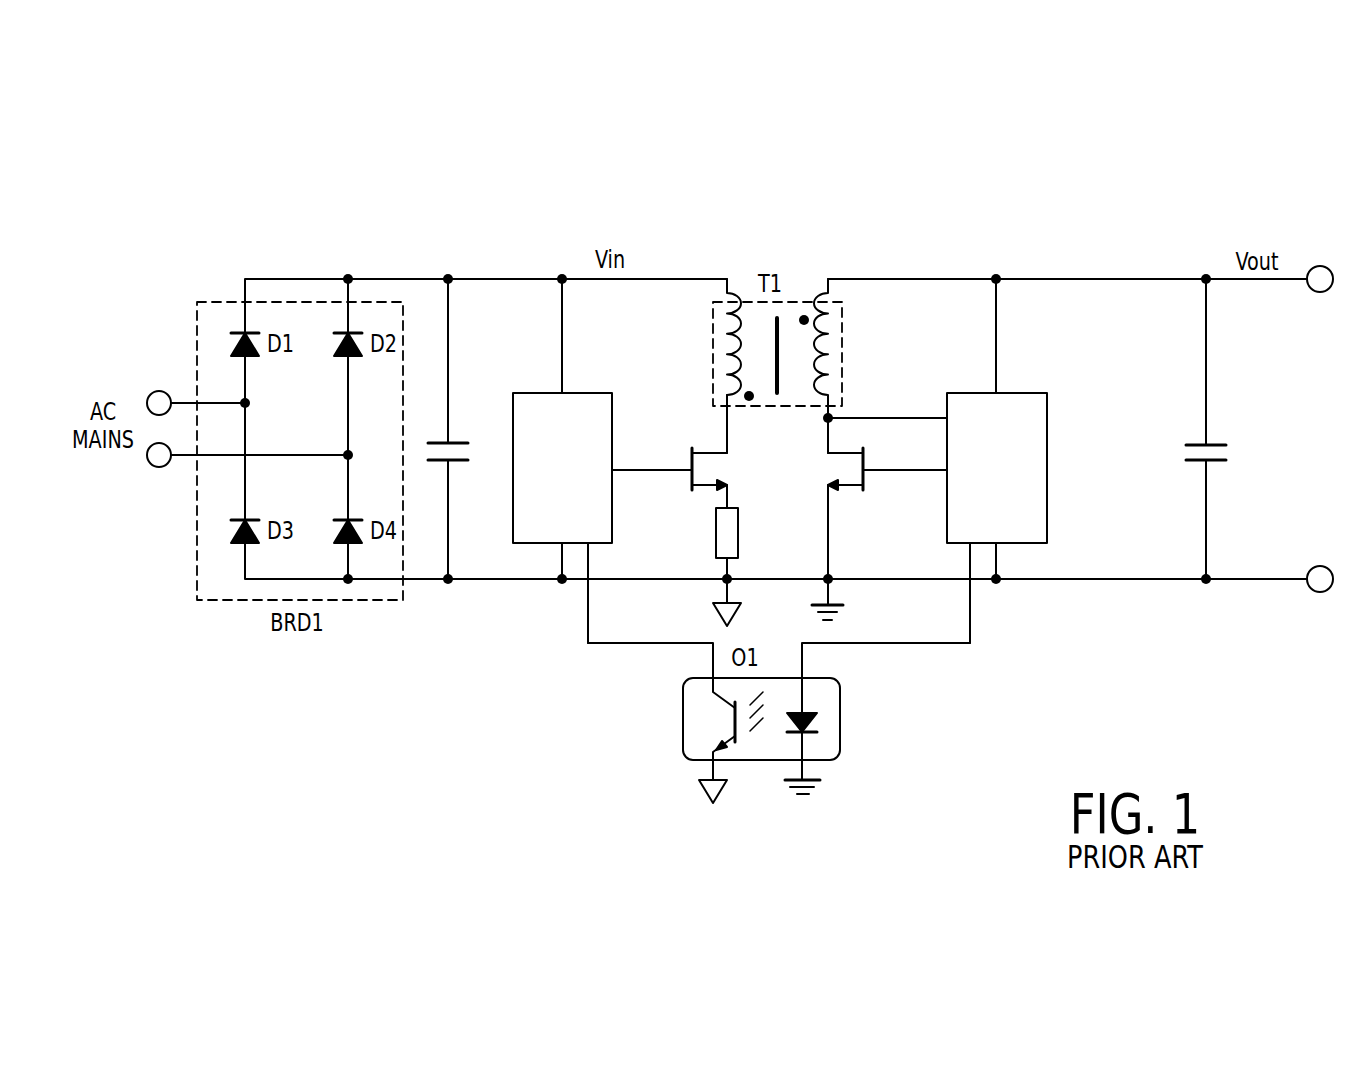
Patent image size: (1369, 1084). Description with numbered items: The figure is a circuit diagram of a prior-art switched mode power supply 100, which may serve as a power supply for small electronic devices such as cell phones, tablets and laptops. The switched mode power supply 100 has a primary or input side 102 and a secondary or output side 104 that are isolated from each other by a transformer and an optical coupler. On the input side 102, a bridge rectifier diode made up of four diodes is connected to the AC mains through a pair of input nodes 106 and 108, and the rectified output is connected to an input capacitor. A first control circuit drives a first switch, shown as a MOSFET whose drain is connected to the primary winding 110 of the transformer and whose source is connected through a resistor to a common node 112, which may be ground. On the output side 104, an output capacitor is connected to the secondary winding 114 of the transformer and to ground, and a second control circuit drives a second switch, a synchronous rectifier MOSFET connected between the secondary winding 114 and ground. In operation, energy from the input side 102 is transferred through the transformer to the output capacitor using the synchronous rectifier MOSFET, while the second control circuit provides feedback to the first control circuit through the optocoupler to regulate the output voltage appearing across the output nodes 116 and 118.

The switched mode power supply 100 is at (1092, 679).
The input side 102 is at (583, 207).
The output side 104 is at (1123, 216).
The input node 106 is at (150, 391).
The input node 108 is at (154, 467).
The primary winding 110 is at (740, 300).
The common node 112 is at (720, 615).
The secondary winding 114 is at (811, 300).
The output node 116 is at (1320, 266).
The output node 118 is at (1316, 592).